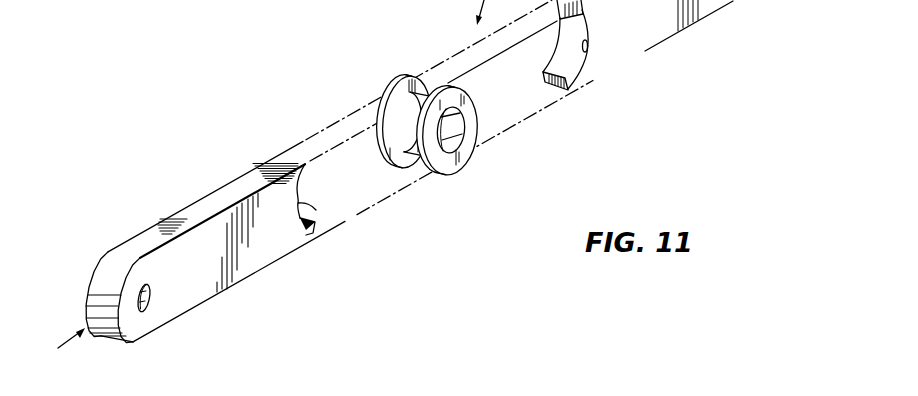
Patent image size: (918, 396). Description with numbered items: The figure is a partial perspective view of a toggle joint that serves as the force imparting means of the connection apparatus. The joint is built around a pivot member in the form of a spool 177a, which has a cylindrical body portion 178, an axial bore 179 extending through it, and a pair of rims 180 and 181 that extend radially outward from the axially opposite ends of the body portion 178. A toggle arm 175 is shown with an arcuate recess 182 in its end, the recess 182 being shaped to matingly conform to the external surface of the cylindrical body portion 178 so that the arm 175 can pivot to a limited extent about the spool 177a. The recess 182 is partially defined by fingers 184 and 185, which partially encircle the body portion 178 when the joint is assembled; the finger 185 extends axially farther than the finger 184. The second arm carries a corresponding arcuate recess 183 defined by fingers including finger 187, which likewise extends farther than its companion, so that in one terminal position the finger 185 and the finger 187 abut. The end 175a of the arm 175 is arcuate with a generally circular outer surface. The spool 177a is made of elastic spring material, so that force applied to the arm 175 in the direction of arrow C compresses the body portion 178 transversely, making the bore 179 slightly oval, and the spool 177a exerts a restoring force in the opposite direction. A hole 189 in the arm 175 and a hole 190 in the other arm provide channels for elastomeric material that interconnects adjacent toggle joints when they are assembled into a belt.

The toggle arm 175 is at (222, 198).
The end of toggle arm 175a is at (92, 302).
The arrow indicating force direction C is at (62, 346).
The hole 189 is at (151, 311).
The finger 184 is at (304, 166).
The arcuate recess 182 is at (298, 203).
The finger 185 is at (312, 237).
The rim 181 is at (407, 77).
The cylindrical body portion 178 is at (410, 160).
The rim 180 is at (474, 128).
The axial bore 179 is at (453, 136).
The spool 177a is at (448, 186).
The arcuate recess 183 is at (586, 58).
The finger 187 is at (558, 91).
The hole 190 is at (750, 1).